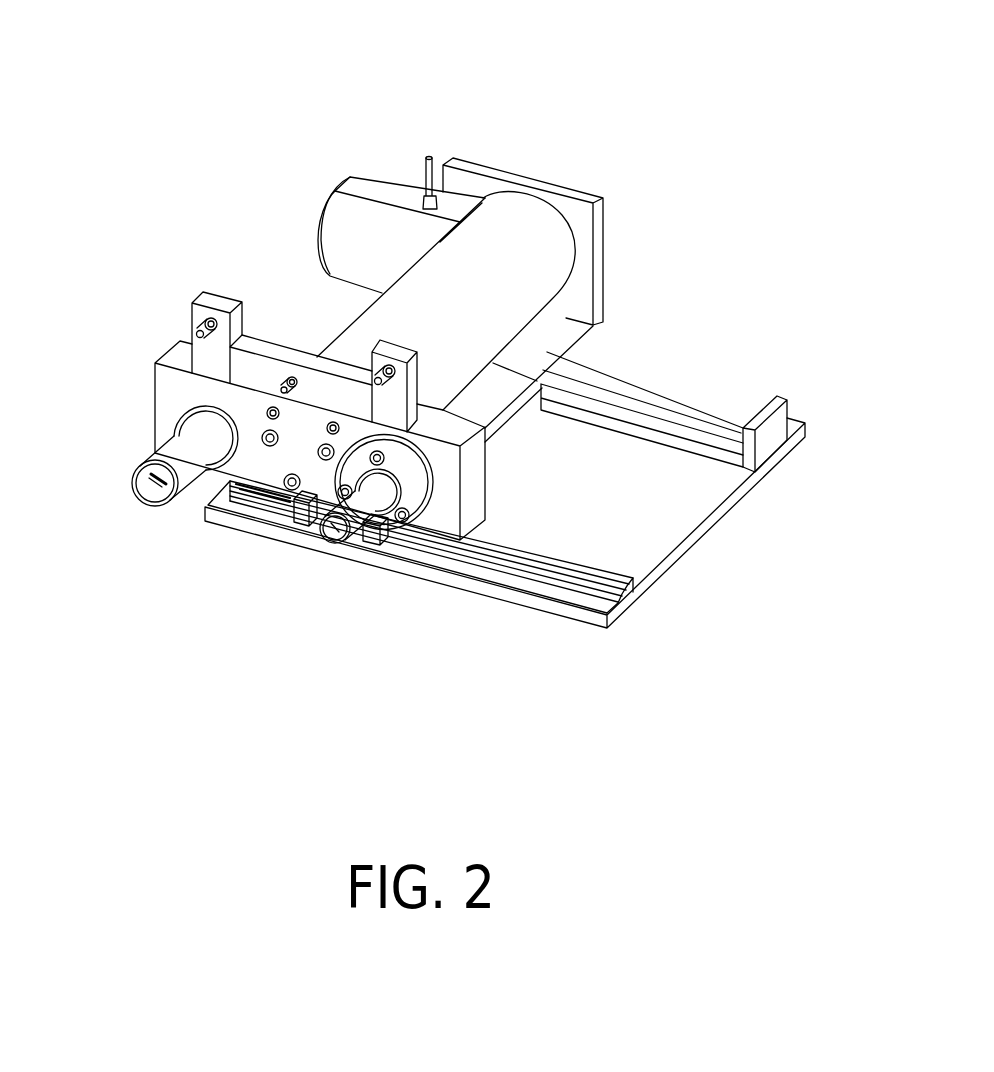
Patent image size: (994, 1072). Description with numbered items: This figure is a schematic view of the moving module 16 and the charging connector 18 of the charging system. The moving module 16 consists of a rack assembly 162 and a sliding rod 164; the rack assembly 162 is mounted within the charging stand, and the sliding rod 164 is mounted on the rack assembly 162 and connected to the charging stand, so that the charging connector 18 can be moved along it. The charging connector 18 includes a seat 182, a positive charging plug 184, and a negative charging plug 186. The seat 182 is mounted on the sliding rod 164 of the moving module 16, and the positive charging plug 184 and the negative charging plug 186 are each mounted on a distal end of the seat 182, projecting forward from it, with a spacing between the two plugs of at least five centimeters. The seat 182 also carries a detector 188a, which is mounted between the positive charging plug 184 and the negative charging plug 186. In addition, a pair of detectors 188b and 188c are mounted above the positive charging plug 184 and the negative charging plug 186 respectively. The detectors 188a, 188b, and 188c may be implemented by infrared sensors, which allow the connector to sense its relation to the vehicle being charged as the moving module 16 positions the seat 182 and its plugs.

The moving module 16 is at (574, 172).
The rack assembly 162 is at (678, 392).
The sliding rod 164 is at (484, 240).
The charging connector 18 is at (150, 394).
The seat 182 is at (265, 473).
The positive charging plug 184 is at (158, 490).
The negative charging plug 186 is at (337, 530).
The detector 188a is at (280, 378).
The detector 188b is at (198, 322).
The detector 188c is at (372, 374).